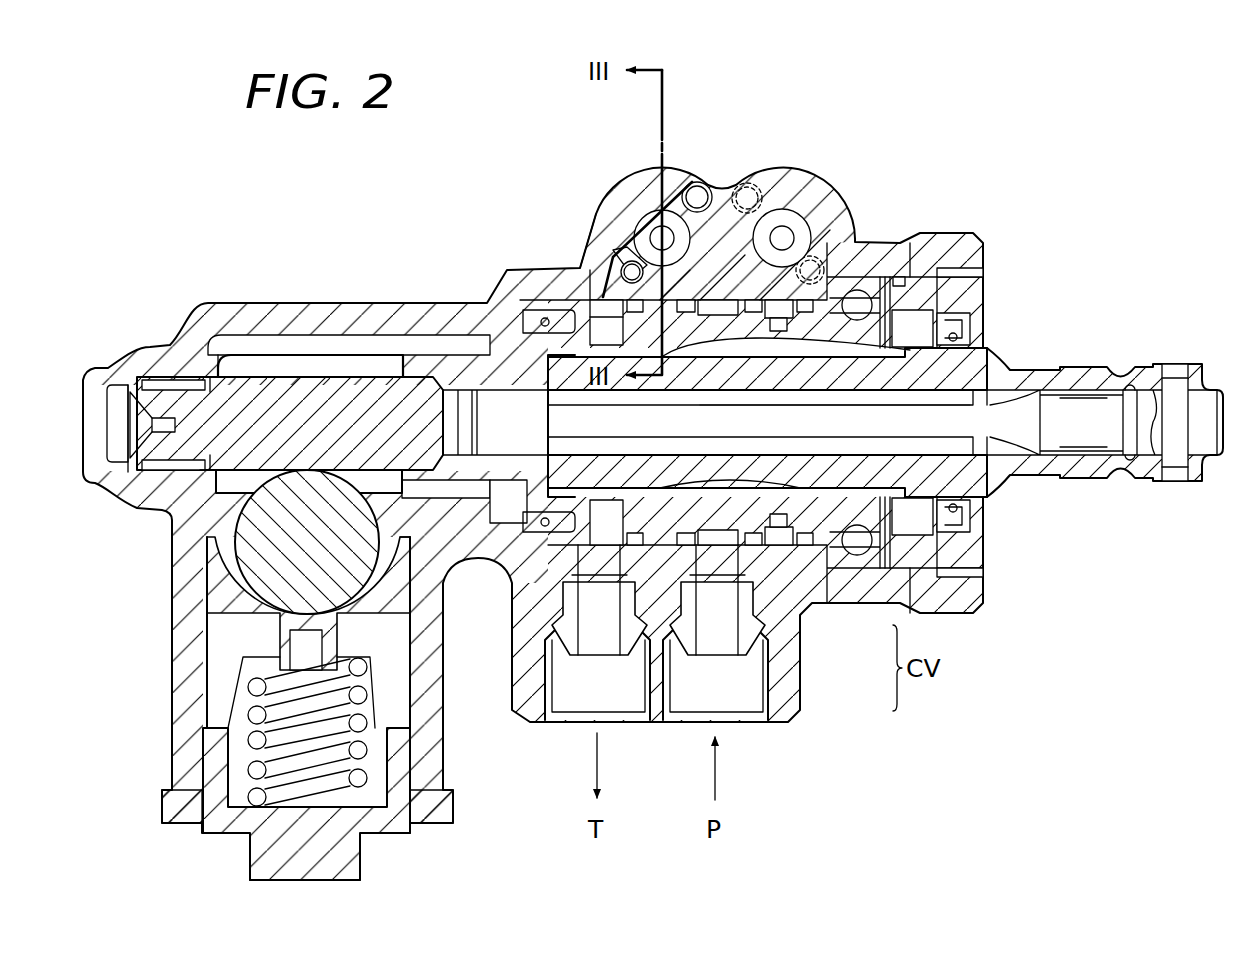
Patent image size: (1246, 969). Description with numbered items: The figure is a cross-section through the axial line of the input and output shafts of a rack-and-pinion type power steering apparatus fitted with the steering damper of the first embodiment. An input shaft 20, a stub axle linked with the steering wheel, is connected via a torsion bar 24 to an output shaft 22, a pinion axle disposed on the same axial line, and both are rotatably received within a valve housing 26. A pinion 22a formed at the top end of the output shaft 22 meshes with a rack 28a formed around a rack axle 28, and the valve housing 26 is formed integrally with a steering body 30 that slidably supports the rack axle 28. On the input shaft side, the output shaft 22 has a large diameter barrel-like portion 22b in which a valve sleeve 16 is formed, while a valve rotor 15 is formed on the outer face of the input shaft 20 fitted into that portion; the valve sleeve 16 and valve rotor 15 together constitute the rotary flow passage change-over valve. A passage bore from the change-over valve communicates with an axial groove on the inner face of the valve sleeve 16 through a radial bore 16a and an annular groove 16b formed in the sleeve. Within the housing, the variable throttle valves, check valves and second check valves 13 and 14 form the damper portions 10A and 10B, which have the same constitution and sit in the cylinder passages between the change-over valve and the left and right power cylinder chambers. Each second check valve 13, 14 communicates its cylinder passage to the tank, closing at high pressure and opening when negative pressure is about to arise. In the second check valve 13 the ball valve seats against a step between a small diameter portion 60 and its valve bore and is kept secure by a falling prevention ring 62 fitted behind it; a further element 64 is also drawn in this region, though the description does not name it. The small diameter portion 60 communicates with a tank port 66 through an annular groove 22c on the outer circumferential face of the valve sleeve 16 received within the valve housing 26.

The damper portion 10A is at (631, 208).
The damper portion 10B is at (820, 218).
The second check valve 13 is at (613, 245).
The second check valve 14 is at (838, 262).
The valve rotor 15 is at (760, 515).
The valve sleeve 16 is at (745, 492).
The radial bore 16a is at (688, 345).
The annular groove 16b is at (548, 378).
The input shaft 20 is at (990, 368).
The output shaft 22 is at (483, 360).
The pinion 22a is at (290, 352).
The large diameter barrel-like portion 22b is at (935, 276).
The annular groove 22c is at (600, 300).
The torsion bar 24 is at (937, 420).
The valve housing 26 is at (977, 250).
The rack axle 28 is at (275, 595).
The rack 28a is at (293, 490).
The steering body 30 is at (180, 730).
The small diameter portion 60 is at (600, 285).
The falling prevention ring 62 is at (647, 218).
The bolt 64 is at (698, 182).
The tank port 66 is at (570, 680).